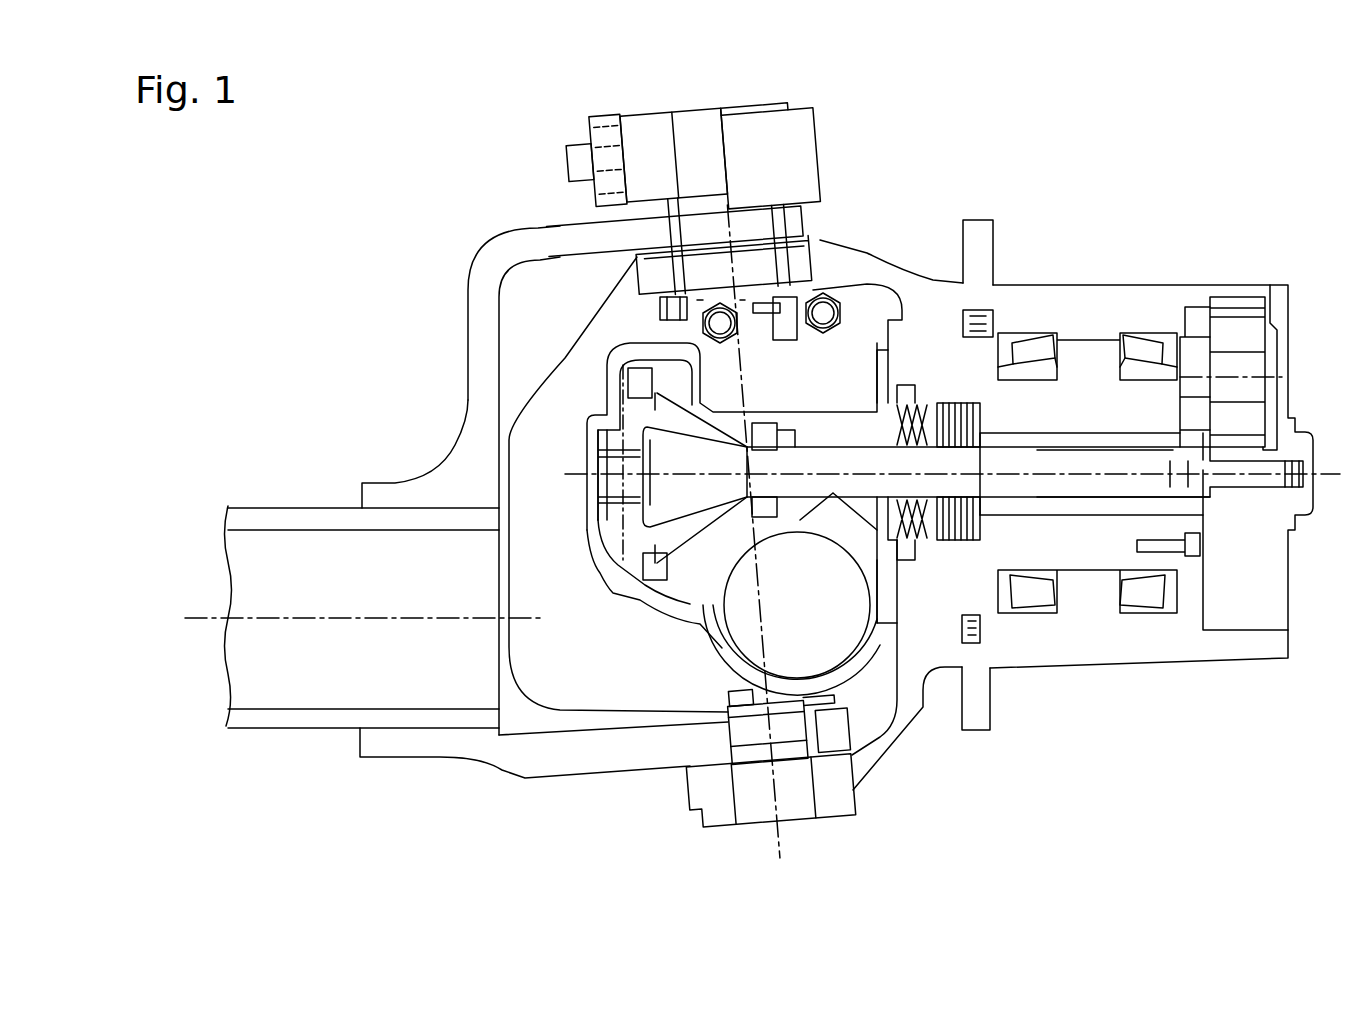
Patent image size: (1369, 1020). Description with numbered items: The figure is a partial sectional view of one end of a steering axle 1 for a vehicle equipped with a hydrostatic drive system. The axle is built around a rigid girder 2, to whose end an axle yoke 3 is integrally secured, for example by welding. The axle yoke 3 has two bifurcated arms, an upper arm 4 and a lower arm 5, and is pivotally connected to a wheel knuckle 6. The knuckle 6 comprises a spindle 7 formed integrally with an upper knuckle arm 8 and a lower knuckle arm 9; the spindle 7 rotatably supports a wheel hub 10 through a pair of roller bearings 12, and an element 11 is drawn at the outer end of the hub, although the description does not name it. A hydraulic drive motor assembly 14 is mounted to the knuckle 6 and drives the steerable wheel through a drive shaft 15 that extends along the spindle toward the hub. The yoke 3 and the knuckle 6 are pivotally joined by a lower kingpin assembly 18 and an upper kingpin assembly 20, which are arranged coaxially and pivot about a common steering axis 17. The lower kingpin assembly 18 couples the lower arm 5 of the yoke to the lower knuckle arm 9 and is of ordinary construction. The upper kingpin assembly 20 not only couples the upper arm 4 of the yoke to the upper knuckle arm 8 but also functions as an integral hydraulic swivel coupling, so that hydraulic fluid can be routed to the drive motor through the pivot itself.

The steering axle 1 is at (372, 232).
The rigid girder 2 is at (266, 506).
The axle yoke 3 is at (446, 470).
The upper arm 4 is at (512, 248).
The lower arm 5 is at (603, 762).
The wheel knuckle 6 is at (940, 655).
The spindle 7 is at (1062, 556).
The upper knuckle arm 8 is at (838, 262).
The lower knuckle arm 9 is at (876, 767).
The wheel hub 10 is at (1155, 634).
The wheel hub 11 is at (1238, 335).
The roller bearings 12 is at (1030, 350).
The hydraulic drive motor assembly 14 is at (705, 650).
The drive shaft 15 is at (1094, 484).
The steering axis 17 is at (770, 848).
The lower kingpin assembly 18 is at (815, 826).
The upper kingpin assembly 20 is at (754, 99).